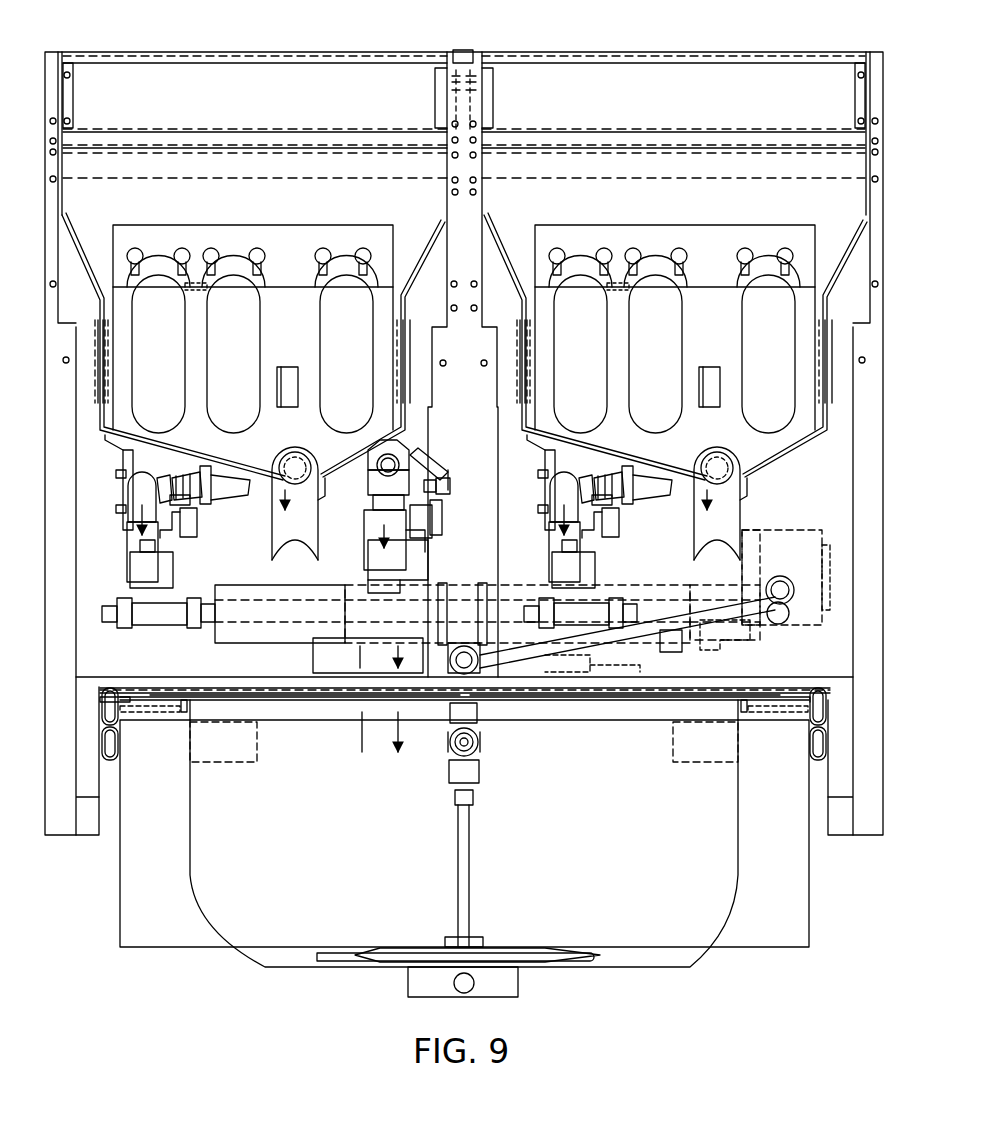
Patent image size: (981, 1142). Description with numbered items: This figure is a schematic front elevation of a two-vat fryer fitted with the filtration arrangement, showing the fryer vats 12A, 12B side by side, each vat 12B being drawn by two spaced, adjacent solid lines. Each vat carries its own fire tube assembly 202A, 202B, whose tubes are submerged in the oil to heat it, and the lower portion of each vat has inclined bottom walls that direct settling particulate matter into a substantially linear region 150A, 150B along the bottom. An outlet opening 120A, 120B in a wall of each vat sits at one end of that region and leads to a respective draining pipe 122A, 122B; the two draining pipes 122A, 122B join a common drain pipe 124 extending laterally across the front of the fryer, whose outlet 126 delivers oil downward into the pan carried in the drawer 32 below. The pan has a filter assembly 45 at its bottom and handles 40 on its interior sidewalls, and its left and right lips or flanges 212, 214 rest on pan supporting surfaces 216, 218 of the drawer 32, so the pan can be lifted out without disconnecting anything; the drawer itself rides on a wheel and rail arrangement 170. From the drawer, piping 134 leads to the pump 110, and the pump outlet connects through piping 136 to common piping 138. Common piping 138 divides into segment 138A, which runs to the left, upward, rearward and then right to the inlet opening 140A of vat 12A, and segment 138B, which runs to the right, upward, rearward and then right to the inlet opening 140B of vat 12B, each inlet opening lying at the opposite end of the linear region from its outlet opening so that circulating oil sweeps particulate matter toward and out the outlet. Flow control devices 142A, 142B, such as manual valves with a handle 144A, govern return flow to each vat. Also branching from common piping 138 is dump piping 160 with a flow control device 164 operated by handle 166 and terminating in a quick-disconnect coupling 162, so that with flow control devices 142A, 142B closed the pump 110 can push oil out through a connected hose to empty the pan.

The fire tube assembly 202A is at (160, 212).
The fire tube assembly 202B is at (603, 212).
The fryer vat 12A is at (252, 307).
The fryer vat 12B is at (674, 307).
The inlet opening 140A is at (283, 450).
The inlet opening 140B is at (705, 450).
The outlet opening 120A is at (312, 446).
The outlet opening 120B is at (735, 446).
The substantially linear region 150A is at (268, 545).
The substantially linear region 150B is at (742, 470).
The flow control device 142A is at (133, 562).
The flow control device 142B is at (590, 572).
The handle 144A is at (185, 520).
The segment 138A is at (188, 628).
The segment 138B is at (532, 485).
The common piping 138 is at (470, 608).
The draining pipe 122A is at (270, 548).
The draining pipe 122B is at (735, 512).
The quick-disconnect coupling 162 is at (415, 440).
The handle 166 is at (440, 485).
The piping 160 is at (270, 560).
The flow control device 164 is at (413, 562).
The outlet 126 is at (332, 675).
The common drain pipe 124 is at (240, 660).
The left lip/flange 212 is at (168, 688).
The right lip/flange 214 is at (763, 690).
The pan supporting surface 216 is at (180, 705).
The pan supporting surface 218 is at (752, 705).
The pump 110 is at (810, 530).
The piping 134 is at (640, 672).
The piping 136 is at (582, 672).
The drawer 32 is at (120, 905).
The handles 40 is at (213, 762).
The wheel and rail arrangement 170 is at (92, 768).
The filter assembly 45 is at (545, 925).